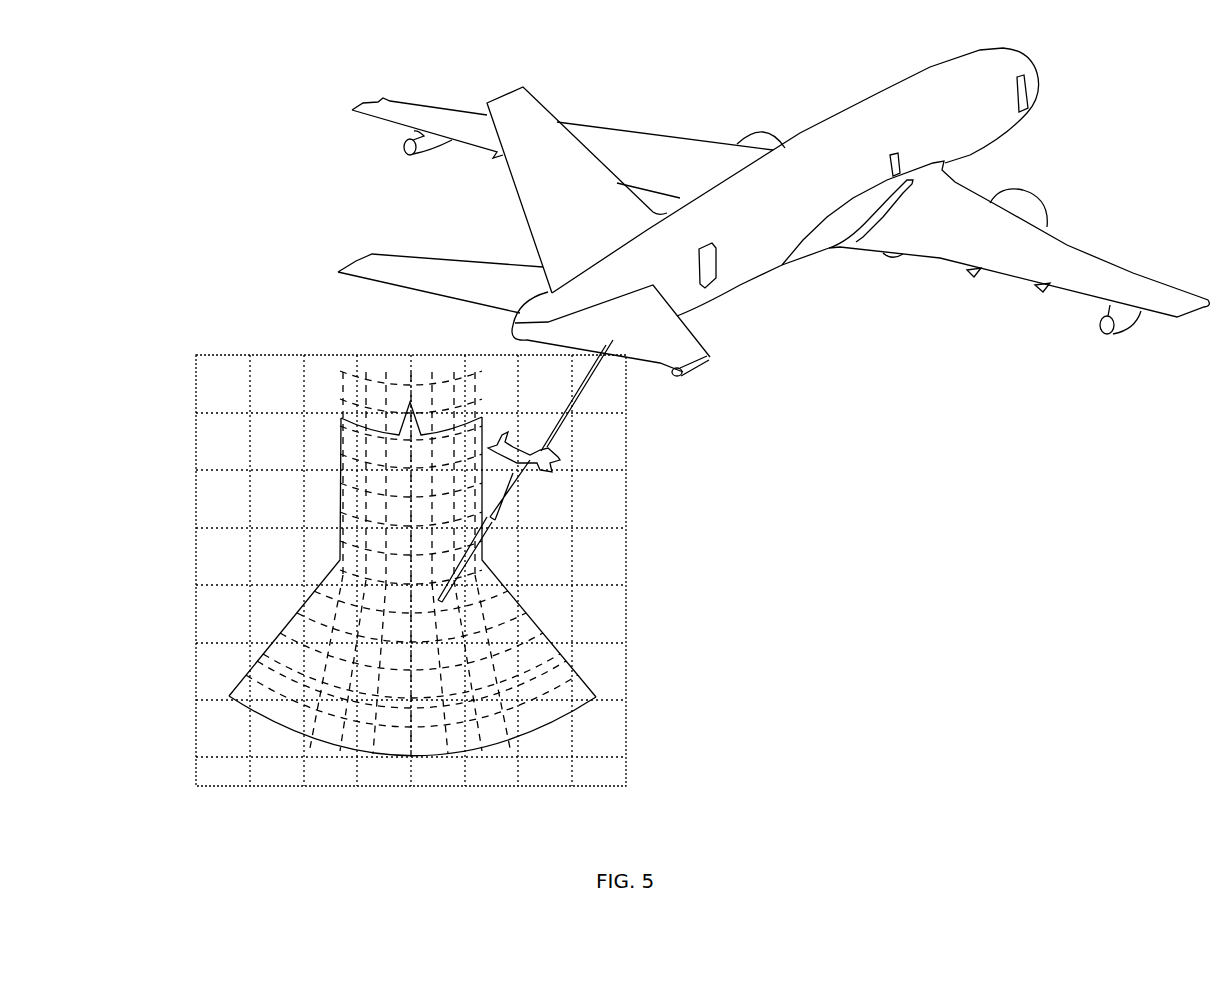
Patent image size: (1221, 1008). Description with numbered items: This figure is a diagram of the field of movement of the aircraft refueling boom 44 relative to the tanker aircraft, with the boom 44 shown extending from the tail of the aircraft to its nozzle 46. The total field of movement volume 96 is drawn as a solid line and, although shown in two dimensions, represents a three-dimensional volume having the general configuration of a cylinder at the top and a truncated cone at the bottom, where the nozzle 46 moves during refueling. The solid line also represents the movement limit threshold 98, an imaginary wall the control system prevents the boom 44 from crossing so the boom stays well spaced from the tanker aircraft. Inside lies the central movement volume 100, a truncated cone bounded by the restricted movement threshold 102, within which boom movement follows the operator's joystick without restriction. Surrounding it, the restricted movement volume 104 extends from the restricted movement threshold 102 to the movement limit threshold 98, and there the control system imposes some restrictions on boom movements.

The boom 44 is at (560, 425).
The nozzle 46 is at (483, 562).
The total field of movement volume 96 is at (271, 708).
The movement limit threshold 98 is at (232, 690).
The central movement volume 100 is at (464, 646).
The restricted movement threshold 102 is at (519, 684).
The restricted movement volume 104 is at (516, 723).